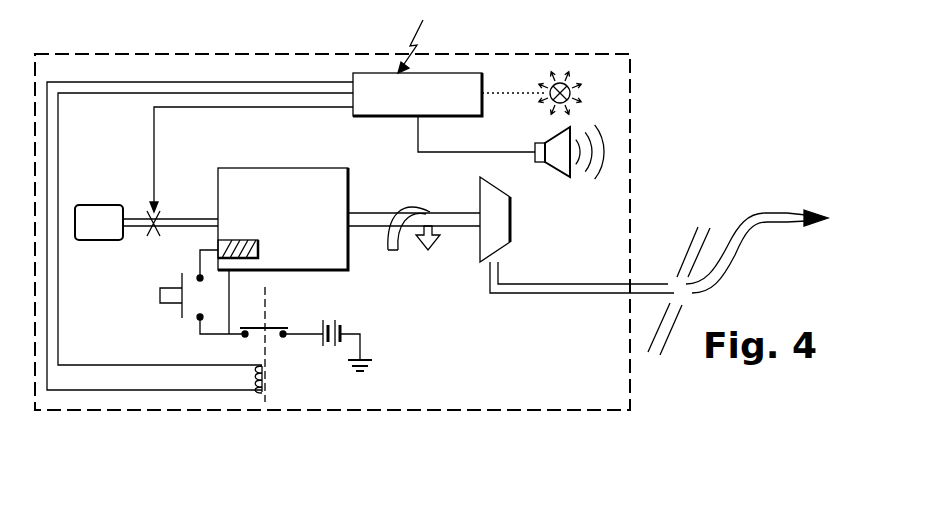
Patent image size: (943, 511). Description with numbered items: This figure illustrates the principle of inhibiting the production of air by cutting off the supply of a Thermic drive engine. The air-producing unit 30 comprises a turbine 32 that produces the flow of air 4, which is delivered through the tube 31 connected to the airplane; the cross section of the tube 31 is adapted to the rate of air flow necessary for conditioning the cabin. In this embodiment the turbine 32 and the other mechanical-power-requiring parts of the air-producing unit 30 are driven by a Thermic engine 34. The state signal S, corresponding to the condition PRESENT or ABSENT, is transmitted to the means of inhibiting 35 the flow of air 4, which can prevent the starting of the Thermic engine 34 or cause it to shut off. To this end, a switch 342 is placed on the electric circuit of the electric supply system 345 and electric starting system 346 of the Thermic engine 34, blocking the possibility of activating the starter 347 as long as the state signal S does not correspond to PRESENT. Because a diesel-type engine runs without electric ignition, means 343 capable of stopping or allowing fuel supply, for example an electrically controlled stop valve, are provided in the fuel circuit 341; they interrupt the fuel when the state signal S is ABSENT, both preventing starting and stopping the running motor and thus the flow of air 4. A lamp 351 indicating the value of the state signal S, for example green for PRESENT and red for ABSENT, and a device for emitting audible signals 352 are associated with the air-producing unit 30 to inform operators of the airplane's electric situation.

The air-producing unit 30 is at (163, 434).
The tube 31 is at (664, 283).
The turbine 32 is at (503, 233).
The Thermic engine 34 is at (280, 176).
The fuel circuit 341 is at (137, 216).
The switch 342 is at (270, 358).
The means capable of stopping or allowing fuel supply 343 is at (162, 216).
The electric supply system 345 is at (232, 293).
The electric starting system 346 is at (200, 320).
The starter 347 is at (238, 240).
The means of inhibiting the flow of air 35 is at (385, 117).
The lamp 351 is at (556, 76).
The device for emitting audible signals 352 is at (561, 166).
The state signal S is at (418, 46).
The flow of air 4 is at (800, 210).